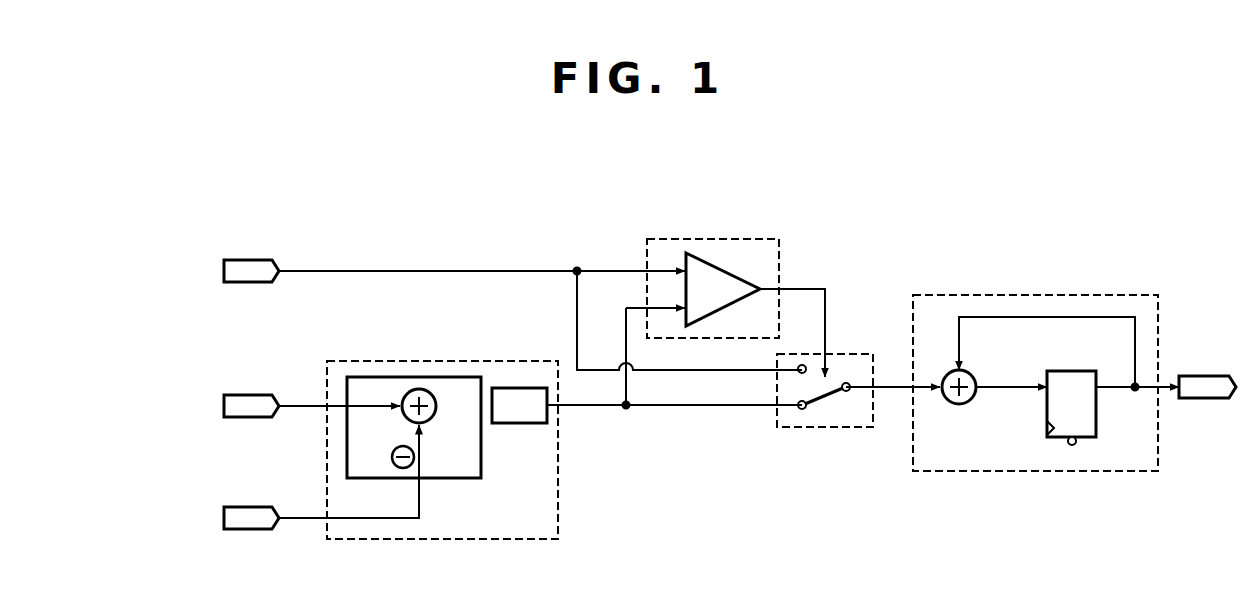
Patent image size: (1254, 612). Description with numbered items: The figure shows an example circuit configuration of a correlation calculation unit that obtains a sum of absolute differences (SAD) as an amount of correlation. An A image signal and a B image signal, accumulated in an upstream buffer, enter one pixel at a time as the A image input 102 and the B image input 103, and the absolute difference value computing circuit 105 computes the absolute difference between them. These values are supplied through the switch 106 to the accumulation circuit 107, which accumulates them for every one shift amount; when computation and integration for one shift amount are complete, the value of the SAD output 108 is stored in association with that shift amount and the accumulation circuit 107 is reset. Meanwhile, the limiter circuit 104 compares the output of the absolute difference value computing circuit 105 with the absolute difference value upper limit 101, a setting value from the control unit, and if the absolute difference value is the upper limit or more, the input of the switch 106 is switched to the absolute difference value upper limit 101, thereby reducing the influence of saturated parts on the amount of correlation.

The absolute difference value upper limit 101 is at (263, 260).
The A image input 102 is at (263, 395).
The B image input 103 is at (263, 507).
The limiter circuit 104 is at (753, 237).
The absolute difference value computing circuit 105 is at (517, 360).
The switch 106 is at (865, 352).
The accumulation circuit 107 is at (1121, 293).
The SAD output 108 is at (1212, 374).